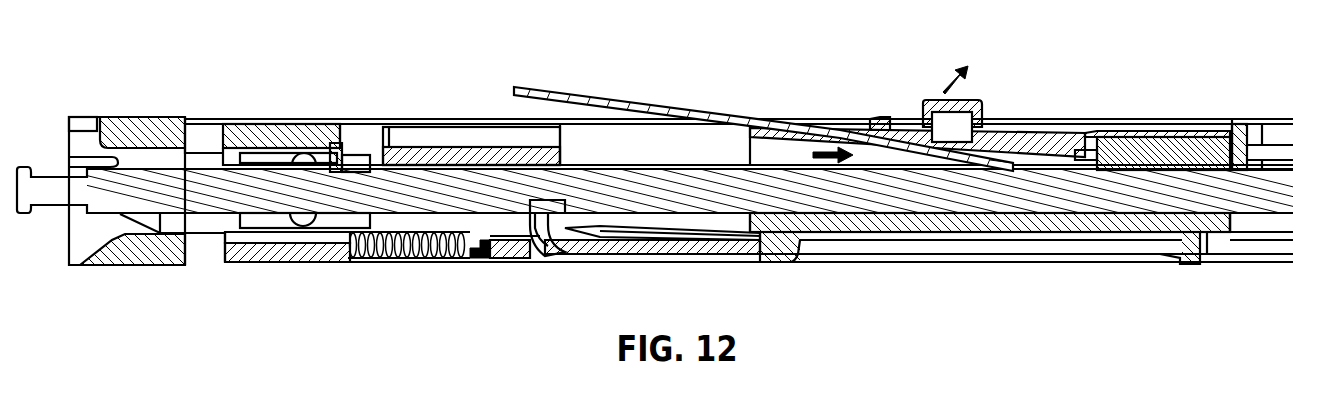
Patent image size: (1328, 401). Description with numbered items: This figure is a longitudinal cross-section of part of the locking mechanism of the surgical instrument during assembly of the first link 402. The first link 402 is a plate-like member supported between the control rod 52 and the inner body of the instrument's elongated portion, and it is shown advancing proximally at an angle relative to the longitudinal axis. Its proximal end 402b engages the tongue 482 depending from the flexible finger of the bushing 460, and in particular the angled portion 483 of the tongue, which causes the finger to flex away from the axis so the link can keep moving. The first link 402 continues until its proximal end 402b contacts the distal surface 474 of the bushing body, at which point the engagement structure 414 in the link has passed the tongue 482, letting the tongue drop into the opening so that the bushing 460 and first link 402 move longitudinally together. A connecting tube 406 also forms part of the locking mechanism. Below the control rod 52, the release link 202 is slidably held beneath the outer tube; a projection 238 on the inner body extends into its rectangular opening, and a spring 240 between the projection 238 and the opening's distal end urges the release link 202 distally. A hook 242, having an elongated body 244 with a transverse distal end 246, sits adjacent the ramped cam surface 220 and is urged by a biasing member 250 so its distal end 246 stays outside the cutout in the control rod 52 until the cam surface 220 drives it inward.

The control rod 52 is at (1247, 188).
The release link 202 is at (1093, 226).
The ramped cam surface 220 is at (522, 254).
The projection 238 is at (474, 258).
The spring 240 is at (381, 258).
The hook 242 is at (574, 256).
The elongated body 244 is at (737, 252).
The transverse distal end 246 is at (548, 255).
The biasing member 250 is at (668, 241).
The first link 402 is at (618, 103).
The proximal end 402b is at (1010, 166).
The connecting tube 406 is at (1272, 160).
The engagement structure 414 is at (807, 135).
The bushing 460 is at (1187, 143).
The distal surface 474 is at (1137, 135).
The tongue 482 is at (897, 127).
The angled portion 483 is at (880, 120).